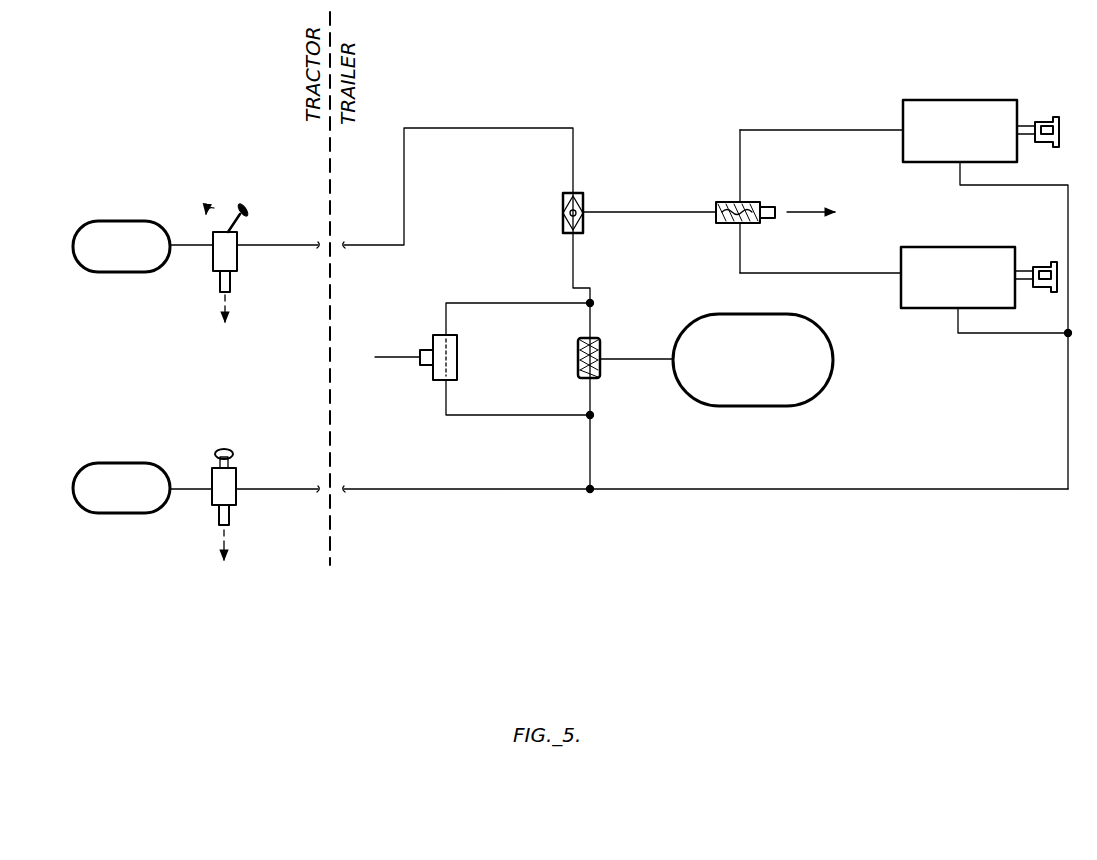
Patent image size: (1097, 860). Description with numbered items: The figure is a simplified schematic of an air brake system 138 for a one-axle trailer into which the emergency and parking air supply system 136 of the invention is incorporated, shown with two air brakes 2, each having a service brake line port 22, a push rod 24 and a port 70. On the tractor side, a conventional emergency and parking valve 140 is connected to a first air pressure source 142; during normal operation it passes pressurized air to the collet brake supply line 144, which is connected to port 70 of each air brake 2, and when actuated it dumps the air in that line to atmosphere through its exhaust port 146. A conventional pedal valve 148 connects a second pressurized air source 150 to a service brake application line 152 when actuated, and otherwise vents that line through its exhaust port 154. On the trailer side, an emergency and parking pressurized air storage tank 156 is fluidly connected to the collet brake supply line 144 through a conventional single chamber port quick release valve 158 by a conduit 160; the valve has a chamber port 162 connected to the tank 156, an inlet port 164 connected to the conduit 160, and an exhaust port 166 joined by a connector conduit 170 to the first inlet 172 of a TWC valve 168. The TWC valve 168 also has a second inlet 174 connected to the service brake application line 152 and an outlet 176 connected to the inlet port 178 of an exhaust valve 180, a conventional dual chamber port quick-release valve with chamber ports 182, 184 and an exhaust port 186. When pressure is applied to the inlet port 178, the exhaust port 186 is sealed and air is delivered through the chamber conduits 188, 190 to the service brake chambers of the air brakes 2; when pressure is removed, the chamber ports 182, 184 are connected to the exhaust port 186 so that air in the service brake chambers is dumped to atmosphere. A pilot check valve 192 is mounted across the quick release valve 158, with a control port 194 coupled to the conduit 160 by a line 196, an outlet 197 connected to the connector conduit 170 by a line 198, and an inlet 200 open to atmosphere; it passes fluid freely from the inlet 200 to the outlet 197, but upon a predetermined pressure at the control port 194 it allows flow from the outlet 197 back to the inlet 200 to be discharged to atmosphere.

The air brake 2 is at (978, 88).
The service brake line port 22 is at (903, 128).
The push rod 24 is at (1032, 122).
The port 70 is at (958, 170).
The emergency and parking air supply system 136 is at (465, 566).
The air brake system 138 is at (933, 564).
The emergency and parking valve 140 is at (237, 485).
The first air pressure source 142 is at (130, 464).
The collet brake supply line 144 is at (668, 489).
The exhaust port 146 is at (232, 508).
The pedal valve 148 is at (238, 243).
The second pressurized air source 150 is at (114, 222).
The service brake application line 152 is at (470, 128).
The exhaust port 154 is at (232, 275).
The emergency and parking pressurized air storage tank 156 is at (828, 392).
The single chamber port quick release valve 158 is at (605, 355).
The conduit 160 is at (591, 449).
The chamber port 162 is at (602, 365).
The inlet port 164 is at (594, 382).
The exhaust port 166 is at (598, 341).
The TWC valve 168 is at (588, 206).
The connector conduit 170 is at (592, 292).
The first inlet 172 is at (582, 233).
The second inlet 174 is at (580, 195).
The outlet 176 is at (584, 215).
The inlet port 178 is at (716, 207).
The exhaust valve 180 is at (768, 205).
The chamber port 182 is at (740, 200).
The chamber port 184 is at (741, 235).
The exhaust port 186 is at (765, 219).
The chamber conduit 188 is at (785, 130).
The chamber conduit 190 is at (812, 273).
The pilot check valve 192 is at (432, 366).
The control port 194 is at (446, 385).
The line 196 is at (486, 415).
The outlet 197 is at (445, 336).
The line 198 is at (485, 303).
The inlet 200 is at (430, 352).